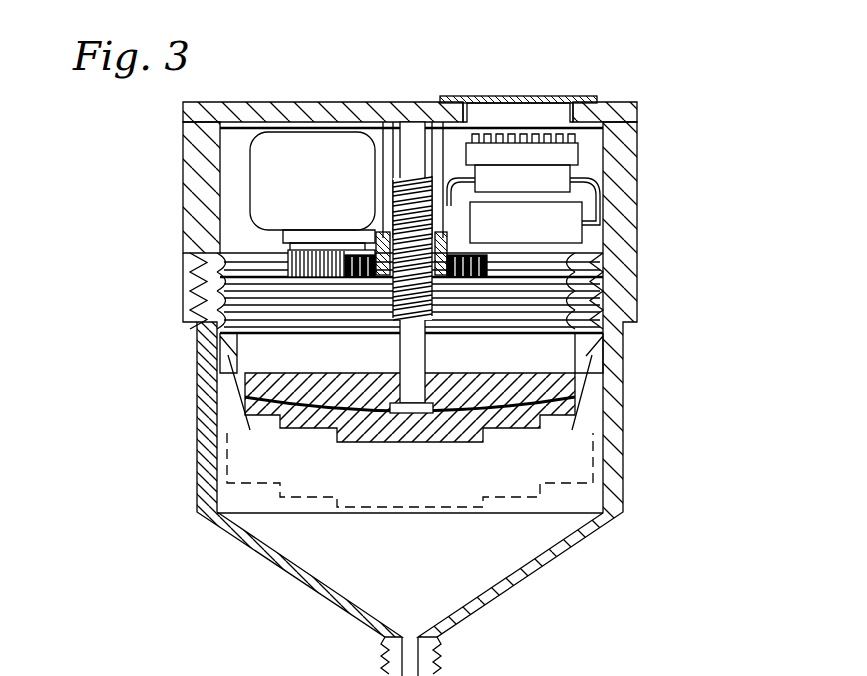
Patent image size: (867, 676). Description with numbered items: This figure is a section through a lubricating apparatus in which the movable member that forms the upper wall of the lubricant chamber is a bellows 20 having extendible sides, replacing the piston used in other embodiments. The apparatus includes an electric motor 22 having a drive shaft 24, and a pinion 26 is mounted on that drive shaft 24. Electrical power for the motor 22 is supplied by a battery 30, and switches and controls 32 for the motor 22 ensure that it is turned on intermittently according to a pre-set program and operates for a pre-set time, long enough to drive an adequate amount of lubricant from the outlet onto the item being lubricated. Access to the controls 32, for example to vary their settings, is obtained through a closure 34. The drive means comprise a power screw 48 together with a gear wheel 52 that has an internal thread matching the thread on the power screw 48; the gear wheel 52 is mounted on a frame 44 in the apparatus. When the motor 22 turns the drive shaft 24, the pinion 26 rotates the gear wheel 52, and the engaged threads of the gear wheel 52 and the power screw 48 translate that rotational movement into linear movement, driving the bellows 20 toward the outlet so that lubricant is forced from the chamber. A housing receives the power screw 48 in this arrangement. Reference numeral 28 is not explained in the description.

The bellows 20 is at (638, 308).
The motor 22 is at (305, 135).
The drive shaft 24 is at (285, 240).
The pinion 26 is at (188, 287).
The housing cover 28 is at (640, 112).
The battery 30 is at (565, 233).
The switches and controls 32 is at (567, 155).
The closure 34 is at (487, 97).
The frame 44 is at (350, 235).
The power screw 48 is at (415, 342).
The gear wheel 52 is at (470, 290).